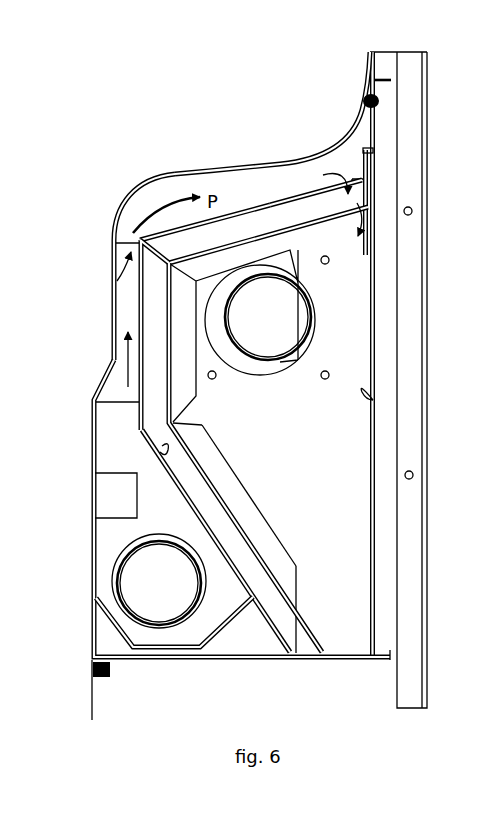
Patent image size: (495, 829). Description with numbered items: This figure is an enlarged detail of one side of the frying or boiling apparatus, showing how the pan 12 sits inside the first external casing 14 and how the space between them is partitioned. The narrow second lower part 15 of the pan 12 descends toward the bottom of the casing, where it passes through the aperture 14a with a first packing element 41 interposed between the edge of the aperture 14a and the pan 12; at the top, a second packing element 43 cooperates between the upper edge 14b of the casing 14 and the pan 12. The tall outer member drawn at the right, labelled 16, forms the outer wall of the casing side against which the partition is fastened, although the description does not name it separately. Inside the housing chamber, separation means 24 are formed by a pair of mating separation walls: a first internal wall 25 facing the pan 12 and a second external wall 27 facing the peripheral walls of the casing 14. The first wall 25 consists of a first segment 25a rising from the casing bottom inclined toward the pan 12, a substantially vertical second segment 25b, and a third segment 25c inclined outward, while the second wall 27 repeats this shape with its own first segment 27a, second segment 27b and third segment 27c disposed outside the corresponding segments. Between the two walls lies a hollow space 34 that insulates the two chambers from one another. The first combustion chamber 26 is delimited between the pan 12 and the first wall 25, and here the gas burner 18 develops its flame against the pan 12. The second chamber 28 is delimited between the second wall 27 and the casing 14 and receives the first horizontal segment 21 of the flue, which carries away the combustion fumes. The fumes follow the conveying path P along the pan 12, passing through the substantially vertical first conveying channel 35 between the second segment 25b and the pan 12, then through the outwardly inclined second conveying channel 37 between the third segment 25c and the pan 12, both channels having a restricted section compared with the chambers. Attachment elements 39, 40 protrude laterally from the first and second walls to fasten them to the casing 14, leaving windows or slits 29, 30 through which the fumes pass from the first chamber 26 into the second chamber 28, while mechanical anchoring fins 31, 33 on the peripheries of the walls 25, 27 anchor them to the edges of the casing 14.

The pan 12 is at (116, 205).
The first external casing 14 is at (373, 353).
The aperture 14a is at (110, 672).
The upper edge 14b is at (382, 92).
The second lower part 15 is at (91, 630).
The center pillar outer panel 16 is at (410, 663).
The gas burners 18 is at (155, 637).
The first horizontal segment 21 is at (273, 363).
The separation means 24 is at (258, 634).
The first separation wall 25 is at (154, 471).
The first segment 25a is at (237, 577).
The second segment 25b is at (94, 402).
The third segment 25c is at (268, 205).
The first combustion chamber 26 is at (170, 484).
The second separation wall 27 is at (247, 517).
The first segment 27a is at (298, 574).
The second segment 27b is at (190, 380).
The third segment 27c is at (322, 226).
The second chamber 28 is at (373, 400).
The passage window or slit 29 is at (330, 179).
The passage window or slit 30 is at (402, 209).
The mechanical anchoring fin 31 is at (156, 247).
The mechanical anchoring fin 33 is at (187, 333).
The hollow space 34 is at (162, 446).
The first conveying channel 35 is at (117, 281).
The second conveying channel 37 is at (231, 187).
The attachment element 39 is at (373, 152).
The attachment element 40 is at (370, 181).
The first packing element 41 is at (93, 670).
The second packing element 43 is at (382, 105).